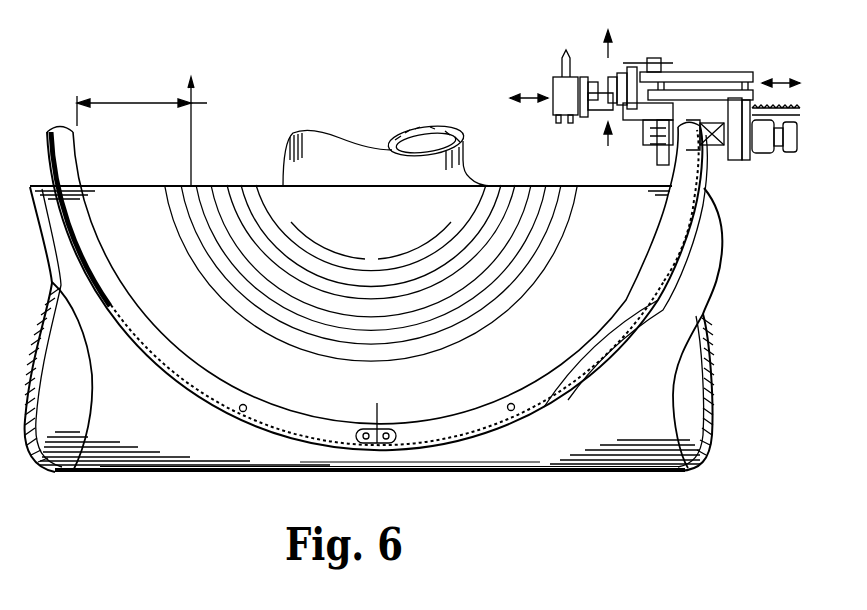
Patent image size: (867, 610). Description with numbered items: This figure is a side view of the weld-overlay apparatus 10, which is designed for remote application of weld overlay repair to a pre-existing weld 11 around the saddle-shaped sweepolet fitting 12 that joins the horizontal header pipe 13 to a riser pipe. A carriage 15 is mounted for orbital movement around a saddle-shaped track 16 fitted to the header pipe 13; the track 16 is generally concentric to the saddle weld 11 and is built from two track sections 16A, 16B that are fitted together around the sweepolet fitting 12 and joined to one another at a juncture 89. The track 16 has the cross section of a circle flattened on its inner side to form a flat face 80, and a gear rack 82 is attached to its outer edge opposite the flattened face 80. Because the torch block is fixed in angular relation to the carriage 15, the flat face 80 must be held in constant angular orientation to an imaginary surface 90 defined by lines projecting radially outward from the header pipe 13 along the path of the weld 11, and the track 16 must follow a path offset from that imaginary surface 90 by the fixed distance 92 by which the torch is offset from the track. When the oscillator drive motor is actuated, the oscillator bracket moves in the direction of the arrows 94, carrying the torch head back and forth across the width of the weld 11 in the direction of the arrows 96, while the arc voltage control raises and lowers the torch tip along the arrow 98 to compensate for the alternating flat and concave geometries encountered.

The weld-overlay apparatus 10 is at (218, 148).
The pre-existing weld 11 is at (572, 232).
The sweepolet fitting 12 is at (455, 166).
The header pipe 13 is at (650, 406).
The carriage 15 is at (679, 19).
The track 16 is at (560, 358).
The track section 16A is at (272, 406).
The track section 16B is at (470, 420).
The flattened face 80 is at (70, 143).
The gear rack 82 is at (543, 410).
The juncture 89 is at (365, 427).
The imaginary surface 90 is at (190, 150).
The offset distance 92 is at (176, 100).
The oscillator bracket movement arrows 94 is at (778, 82).
The torch head movement arrows 96 is at (536, 92).
The torch tip raising and lowering arrow 98 is at (606, 55).